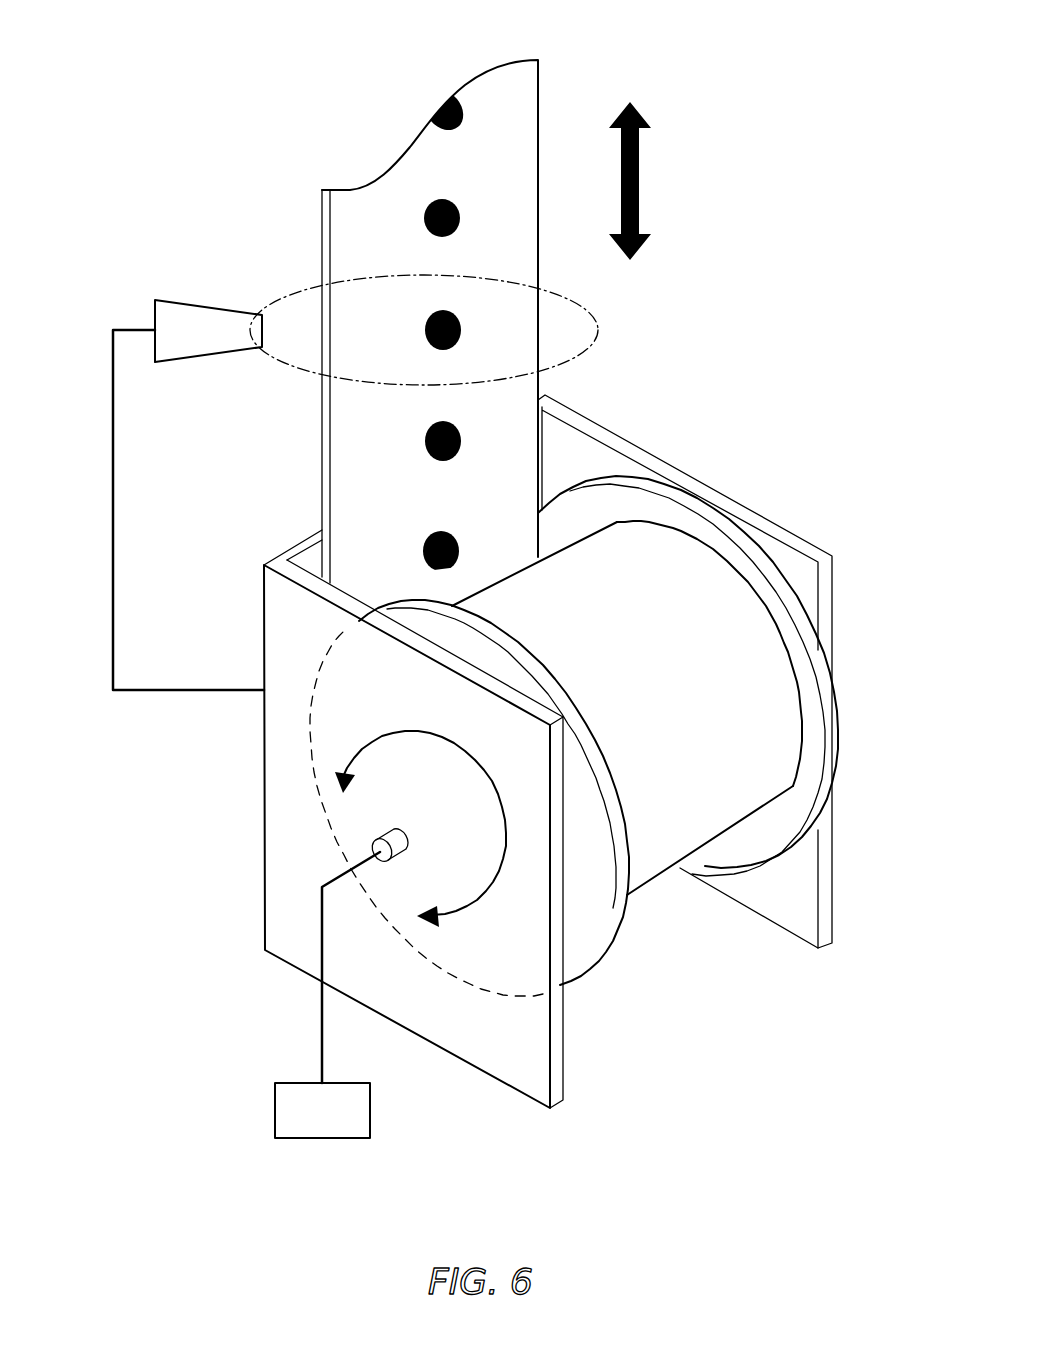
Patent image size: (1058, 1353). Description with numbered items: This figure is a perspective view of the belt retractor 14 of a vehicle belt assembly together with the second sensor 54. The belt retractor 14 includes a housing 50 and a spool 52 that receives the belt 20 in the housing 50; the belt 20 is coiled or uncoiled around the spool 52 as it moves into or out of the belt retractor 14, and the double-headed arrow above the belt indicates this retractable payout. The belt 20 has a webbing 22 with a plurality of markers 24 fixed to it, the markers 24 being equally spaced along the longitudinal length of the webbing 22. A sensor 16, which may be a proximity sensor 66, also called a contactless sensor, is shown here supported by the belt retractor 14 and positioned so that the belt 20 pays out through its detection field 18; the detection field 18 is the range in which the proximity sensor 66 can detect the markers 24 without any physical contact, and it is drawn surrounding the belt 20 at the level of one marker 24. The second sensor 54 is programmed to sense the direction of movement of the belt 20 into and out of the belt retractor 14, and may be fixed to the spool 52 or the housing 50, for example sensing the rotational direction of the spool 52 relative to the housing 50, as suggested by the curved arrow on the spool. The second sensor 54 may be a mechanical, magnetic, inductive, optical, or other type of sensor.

The belt retractor 14 is at (205, 798).
The sensor 16 is at (168, 458).
The proximity sensor 66 is at (173, 300).
The detection field 18 is at (287, 285).
The belt 20 is at (459, 305).
The webbing 22 is at (320, 458).
The markers 24 is at (462, 443).
The housing 50 is at (288, 878).
The spool 52 is at (835, 735).
The second sensor 54 is at (275, 1097).